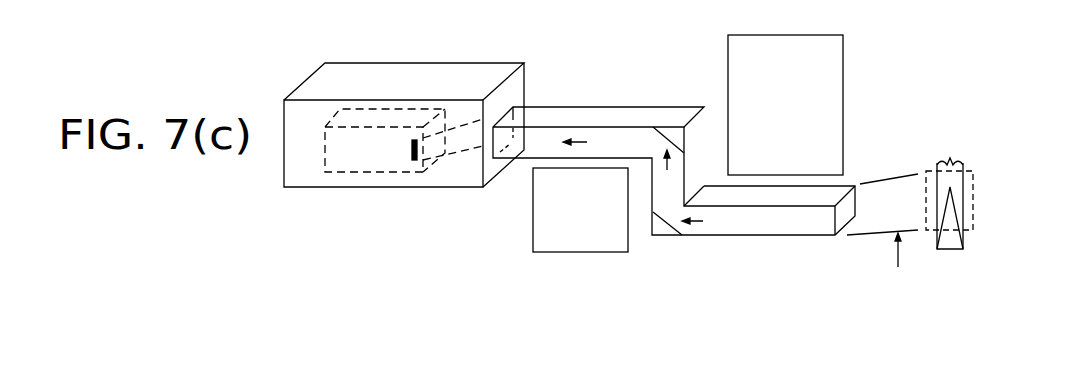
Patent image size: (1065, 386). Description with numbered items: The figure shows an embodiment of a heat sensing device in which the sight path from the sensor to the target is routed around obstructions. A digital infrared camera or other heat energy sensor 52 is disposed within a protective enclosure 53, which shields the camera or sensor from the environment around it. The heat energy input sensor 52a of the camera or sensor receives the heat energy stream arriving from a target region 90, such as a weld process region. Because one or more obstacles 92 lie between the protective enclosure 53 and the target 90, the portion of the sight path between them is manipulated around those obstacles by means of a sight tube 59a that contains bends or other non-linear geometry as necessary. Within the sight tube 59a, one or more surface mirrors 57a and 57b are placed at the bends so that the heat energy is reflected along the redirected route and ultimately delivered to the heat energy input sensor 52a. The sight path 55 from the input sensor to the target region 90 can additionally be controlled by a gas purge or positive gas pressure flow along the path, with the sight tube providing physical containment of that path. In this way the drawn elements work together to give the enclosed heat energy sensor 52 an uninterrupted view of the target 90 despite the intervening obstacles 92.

The protective enclosure 53 is at (412, 78).
The heat energy sensor 52 is at (348, 148).
The heat energy input sensor 52a is at (410, 157).
The sight tube 59a is at (597, 118).
The surface mirror 57a is at (672, 133).
The surface mirror 57b is at (653, 214).
The sight path 55 is at (888, 168).
The target region 90 is at (973, 190).
The obstacle 92 is at (558, 216).